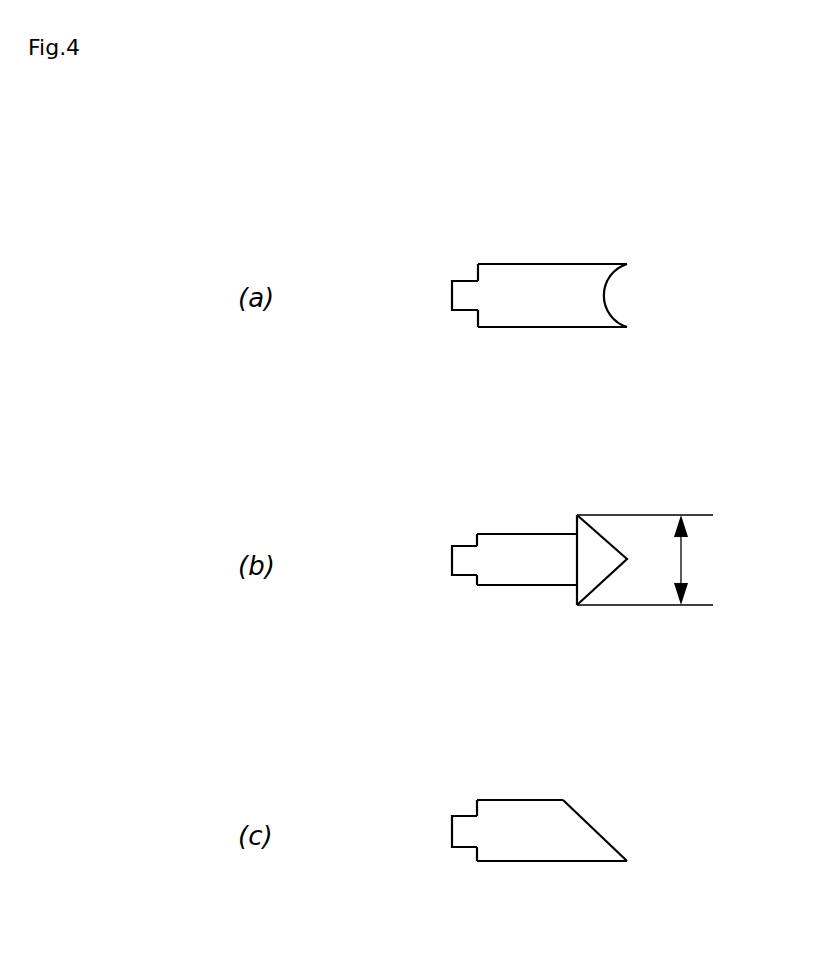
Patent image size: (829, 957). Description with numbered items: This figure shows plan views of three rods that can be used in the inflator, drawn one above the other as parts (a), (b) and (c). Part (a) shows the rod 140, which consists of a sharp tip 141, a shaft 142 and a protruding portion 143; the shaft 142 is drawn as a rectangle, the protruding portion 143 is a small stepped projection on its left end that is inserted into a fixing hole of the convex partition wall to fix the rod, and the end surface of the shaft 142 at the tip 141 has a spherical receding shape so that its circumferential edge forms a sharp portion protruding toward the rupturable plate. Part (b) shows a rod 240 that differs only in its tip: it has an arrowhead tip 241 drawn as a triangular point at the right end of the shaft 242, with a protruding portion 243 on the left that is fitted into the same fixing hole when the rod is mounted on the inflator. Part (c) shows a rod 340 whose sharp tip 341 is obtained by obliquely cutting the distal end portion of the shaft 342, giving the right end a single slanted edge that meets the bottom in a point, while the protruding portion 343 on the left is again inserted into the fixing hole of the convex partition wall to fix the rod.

The rod 140 is at (553, 260).
The sharp tip 141 is at (607, 281).
The shaft 142 is at (530, 328).
The protruding portion 143 is at (458, 293).
The rod 240 is at (536, 528).
The arrowhead tip 241 is at (605, 582).
The shaft 242 is at (517, 587).
The protruding portion 243 is at (458, 563).
The rod 340 is at (532, 795).
The sharp tip 341 is at (625, 844).
The shaft 342 is at (513, 857).
The protruding portion 343 is at (458, 837).